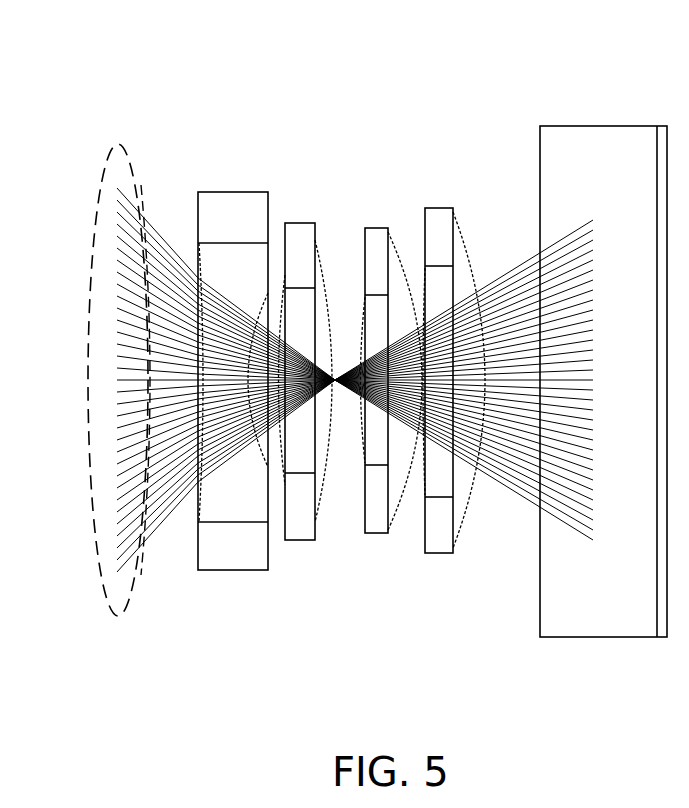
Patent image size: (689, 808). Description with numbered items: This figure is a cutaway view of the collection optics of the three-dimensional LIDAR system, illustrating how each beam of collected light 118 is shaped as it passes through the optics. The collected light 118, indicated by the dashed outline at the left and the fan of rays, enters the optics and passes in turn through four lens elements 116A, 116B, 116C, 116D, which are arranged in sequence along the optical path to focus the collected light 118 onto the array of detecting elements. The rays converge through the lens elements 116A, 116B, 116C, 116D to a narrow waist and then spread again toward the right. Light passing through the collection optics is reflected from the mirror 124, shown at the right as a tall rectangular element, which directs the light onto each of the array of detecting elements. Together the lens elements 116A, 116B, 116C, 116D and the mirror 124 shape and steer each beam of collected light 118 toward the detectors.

The collected light 118 is at (97, 188).
The first lens element 116A is at (232, 192).
The second lens element 116B is at (300, 223).
The third lens element 116C is at (373, 228).
The fourth lens element 116D is at (440, 208).
The mirror 124 is at (590, 126).